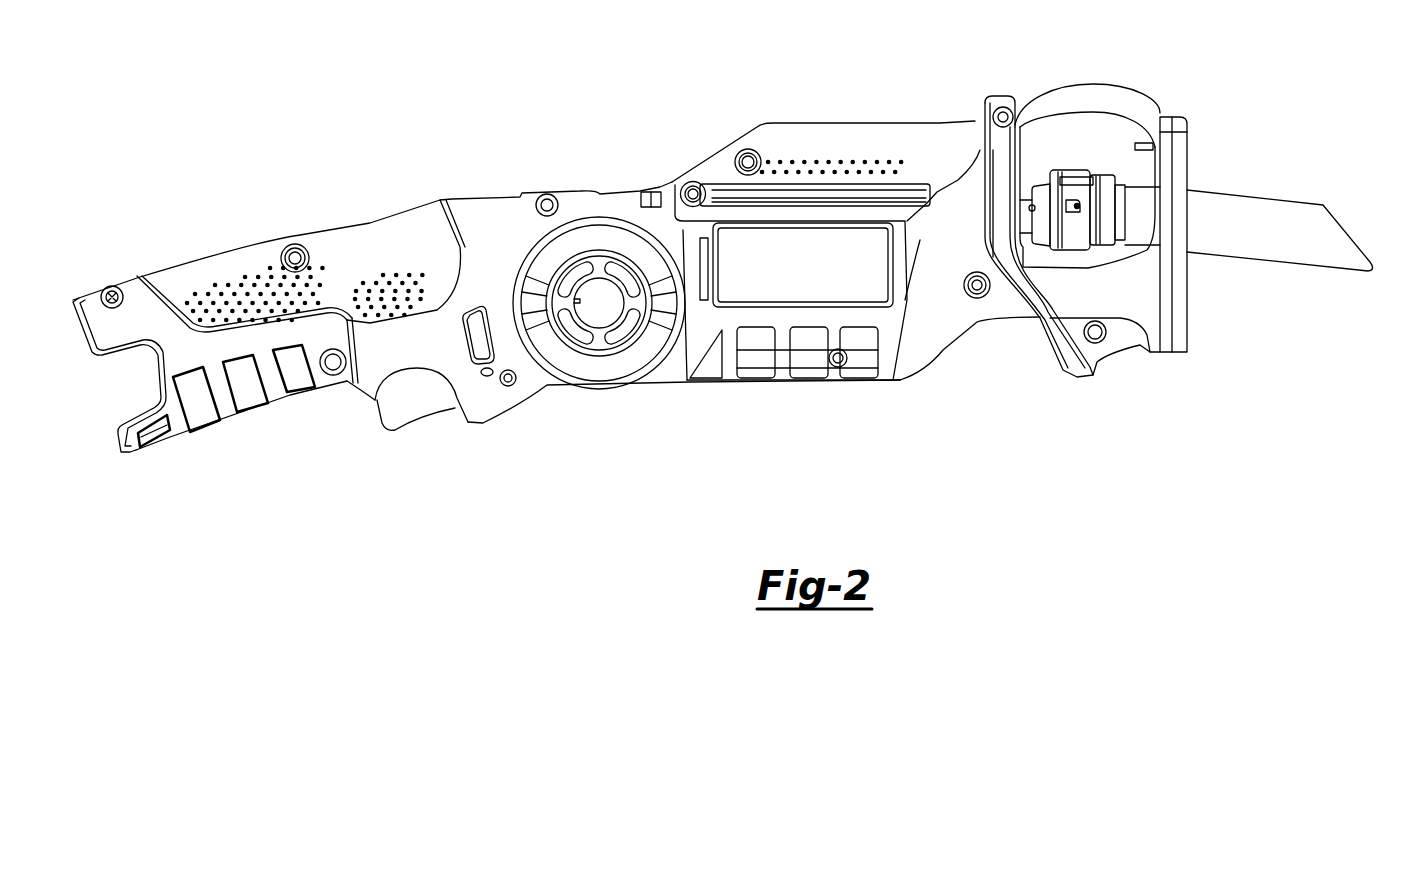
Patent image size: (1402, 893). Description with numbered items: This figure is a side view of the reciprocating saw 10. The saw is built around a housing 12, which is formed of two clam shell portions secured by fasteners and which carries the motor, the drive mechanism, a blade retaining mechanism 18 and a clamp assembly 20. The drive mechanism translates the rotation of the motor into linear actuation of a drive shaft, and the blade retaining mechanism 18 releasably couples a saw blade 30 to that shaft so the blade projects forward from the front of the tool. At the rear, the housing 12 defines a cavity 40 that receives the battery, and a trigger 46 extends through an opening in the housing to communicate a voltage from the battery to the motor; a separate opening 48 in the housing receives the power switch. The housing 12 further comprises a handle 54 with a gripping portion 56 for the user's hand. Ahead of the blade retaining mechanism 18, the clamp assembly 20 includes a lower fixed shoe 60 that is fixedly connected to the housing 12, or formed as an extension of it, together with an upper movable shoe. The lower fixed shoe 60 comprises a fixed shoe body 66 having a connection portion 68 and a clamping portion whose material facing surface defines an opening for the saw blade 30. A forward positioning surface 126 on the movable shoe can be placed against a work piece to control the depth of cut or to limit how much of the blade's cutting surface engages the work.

The reciprocating saw 10 is at (878, 108).
The housing 12 is at (580, 155).
The blade retaining mechanism 18 is at (1073, 173).
The clamp assembly 20 is at (1163, 93).
The saw blade 30 is at (1257, 243).
The cavity 40 is at (140, 395).
The trigger 46 is at (402, 418).
The opening 48 is at (461, 198).
The handle 54 is at (263, 238).
The gripping portion 56 is at (232, 424).
The lower fixed shoe 60 is at (1110, 308).
The fixed shoe body 66 is at (1135, 308).
The connection portion 68 is at (1080, 307).
The forward positioning surface 126 is at (1187, 320).